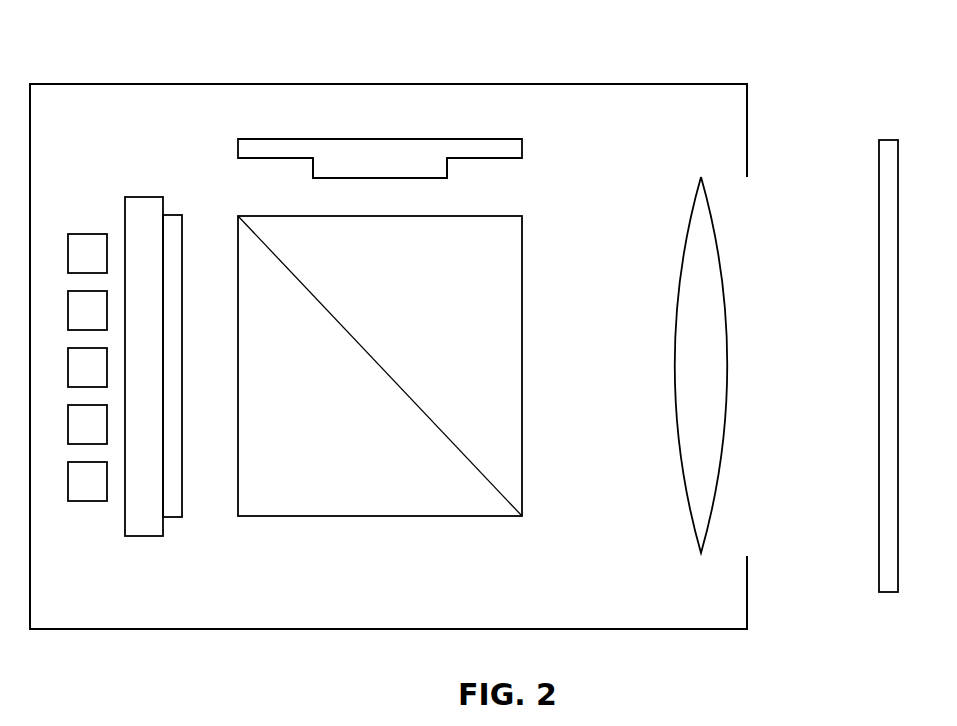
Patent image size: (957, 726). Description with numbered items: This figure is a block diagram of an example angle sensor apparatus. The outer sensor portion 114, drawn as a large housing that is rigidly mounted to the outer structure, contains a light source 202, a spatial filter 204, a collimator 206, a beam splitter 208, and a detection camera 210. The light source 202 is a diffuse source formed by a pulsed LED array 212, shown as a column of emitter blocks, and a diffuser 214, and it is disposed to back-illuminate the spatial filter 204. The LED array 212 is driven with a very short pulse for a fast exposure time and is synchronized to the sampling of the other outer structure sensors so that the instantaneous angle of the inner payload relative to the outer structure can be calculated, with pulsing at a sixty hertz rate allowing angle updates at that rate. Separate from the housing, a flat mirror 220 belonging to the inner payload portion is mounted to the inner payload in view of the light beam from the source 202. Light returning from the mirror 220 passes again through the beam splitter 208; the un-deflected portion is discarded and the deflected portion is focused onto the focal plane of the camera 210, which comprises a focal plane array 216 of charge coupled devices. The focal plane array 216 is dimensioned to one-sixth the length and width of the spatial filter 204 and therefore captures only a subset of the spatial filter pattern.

The outer sensor portion 114 is at (125, 84).
The light source 202 is at (163, 178).
The spatial filter 204 is at (181, 222).
The collimator 206 is at (672, 233).
The beam splitter 208 is at (426, 518).
The detection camera 210 is at (522, 157).
The LED array 212 is at (88, 517).
The diffuser 214 is at (141, 538).
The focal plane array 216 is at (313, 178).
The flat mirror 220 is at (897, 140).